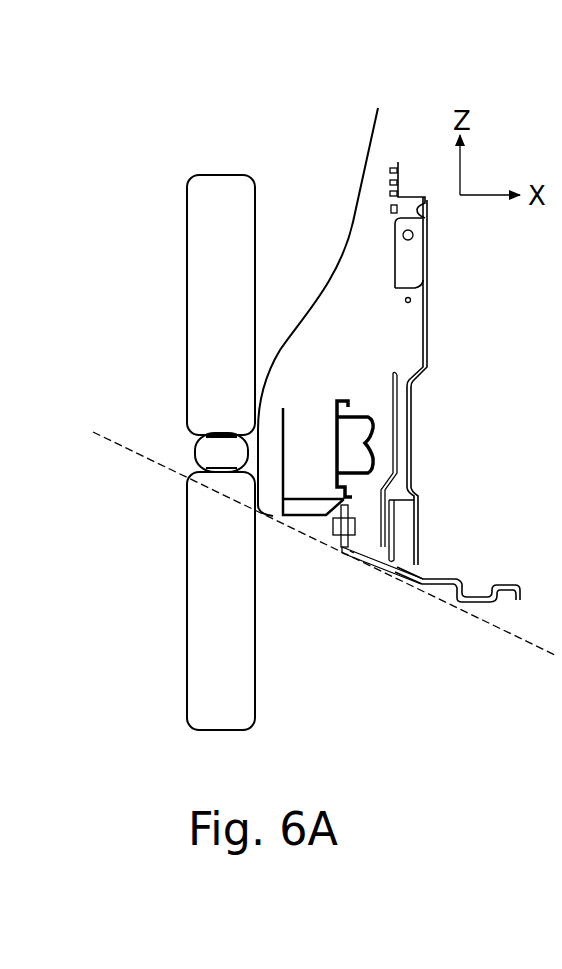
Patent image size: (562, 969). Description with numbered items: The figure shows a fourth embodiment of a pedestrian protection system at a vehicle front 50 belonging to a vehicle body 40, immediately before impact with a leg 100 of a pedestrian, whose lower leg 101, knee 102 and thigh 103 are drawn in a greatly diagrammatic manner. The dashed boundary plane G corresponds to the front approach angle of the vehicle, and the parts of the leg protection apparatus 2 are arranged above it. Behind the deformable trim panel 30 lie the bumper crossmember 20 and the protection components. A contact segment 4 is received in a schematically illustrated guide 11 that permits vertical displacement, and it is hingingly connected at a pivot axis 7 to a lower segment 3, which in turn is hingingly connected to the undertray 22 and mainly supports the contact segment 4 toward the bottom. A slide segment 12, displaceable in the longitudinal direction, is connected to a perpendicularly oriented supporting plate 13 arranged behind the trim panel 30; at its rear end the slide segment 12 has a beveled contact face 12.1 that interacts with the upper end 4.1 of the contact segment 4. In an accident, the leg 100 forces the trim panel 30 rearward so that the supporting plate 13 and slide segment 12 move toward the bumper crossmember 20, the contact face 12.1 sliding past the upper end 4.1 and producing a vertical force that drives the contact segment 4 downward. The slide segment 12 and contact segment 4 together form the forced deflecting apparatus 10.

The leg 100 is at (172, 256).
The thigh 103 is at (245, 318).
The lower leg 101 is at (245, 613).
The knee 102 is at (196, 452).
The vehicle front 50 is at (300, 194).
The trim panel 30 is at (351, 220).
The vehicle body 40 is at (411, 119).
The undertray 22 is at (449, 600).
The bumper crossmember 20 is at (360, 418).
The supporting plate 13 is at (282, 425).
The forced deflecting apparatus 10 is at (384, 532).
The guide 11 is at (364, 524).
The upper end 4.1 is at (365, 488).
The contact segment 4 is at (343, 548).
The slide segment 12 is at (227, 551).
The beveled contact face 12.1 is at (320, 508).
The leg protection apparatus 2 is at (363, 635).
The lower segment 3 is at (362, 560).
The pivot axis 7 is at (352, 553).
The boundary plane G is at (324, 562).